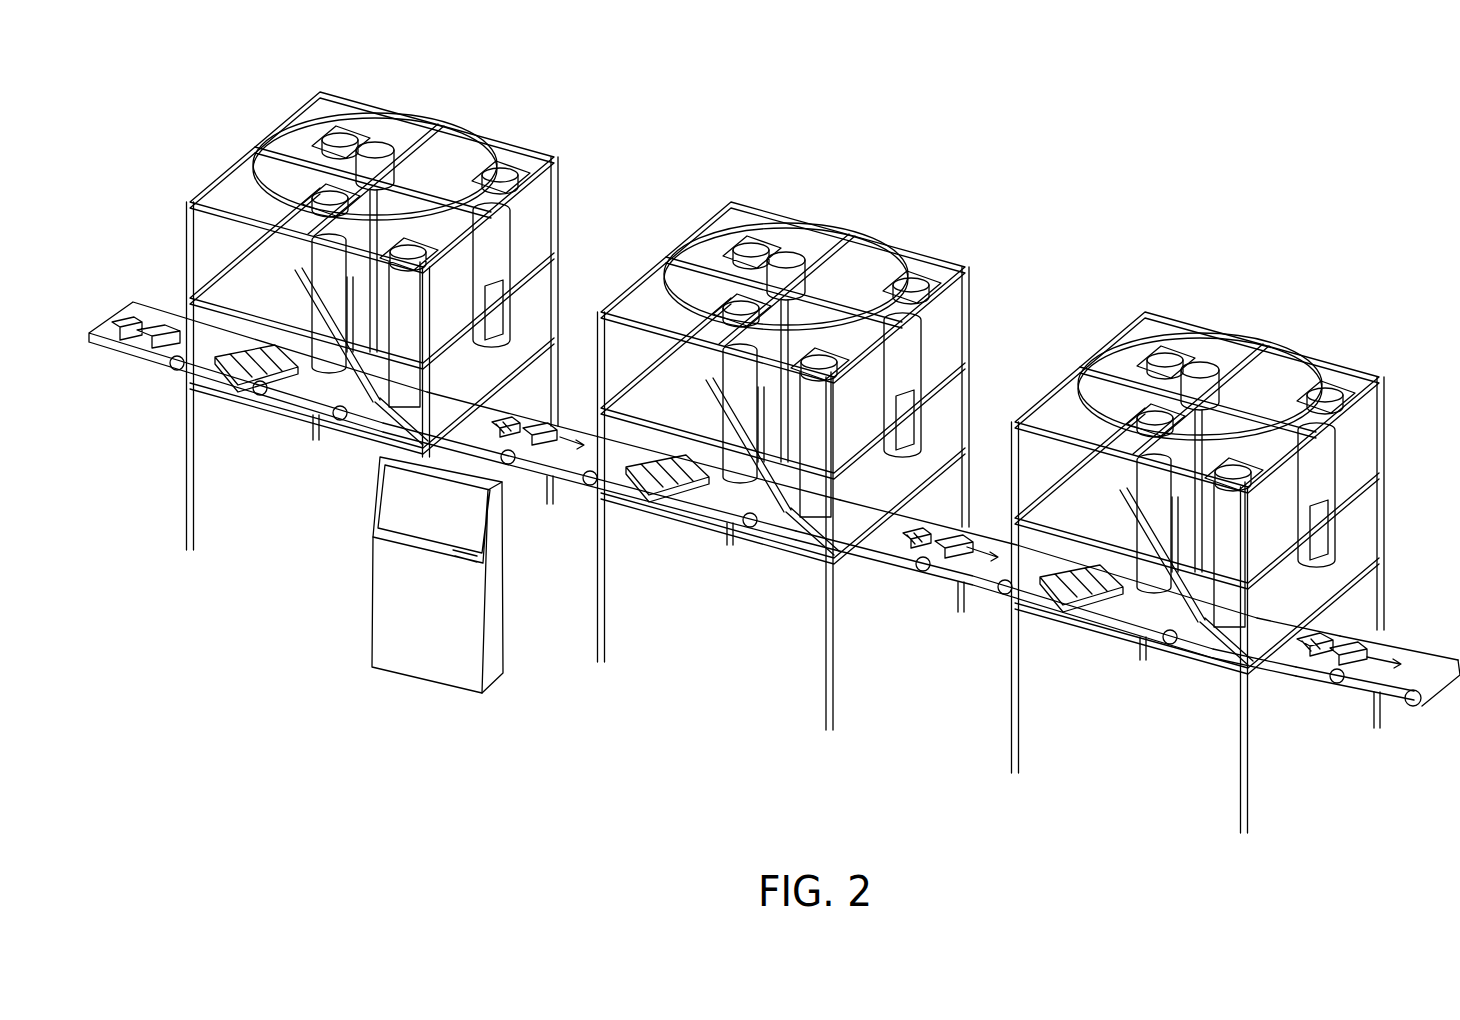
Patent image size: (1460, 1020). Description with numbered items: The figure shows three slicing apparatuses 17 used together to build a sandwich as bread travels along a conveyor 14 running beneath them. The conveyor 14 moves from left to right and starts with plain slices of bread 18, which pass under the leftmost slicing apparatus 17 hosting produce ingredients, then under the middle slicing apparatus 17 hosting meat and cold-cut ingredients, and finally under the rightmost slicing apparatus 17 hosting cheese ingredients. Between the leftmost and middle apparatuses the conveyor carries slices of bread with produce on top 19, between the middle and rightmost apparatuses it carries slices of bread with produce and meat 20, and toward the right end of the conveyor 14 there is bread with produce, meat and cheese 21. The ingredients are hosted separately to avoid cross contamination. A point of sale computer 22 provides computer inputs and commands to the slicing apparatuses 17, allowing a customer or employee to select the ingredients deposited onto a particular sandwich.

The slicing apparatus 17 is at (474, 94).
The bread 18 is at (154, 298).
The slices of bread with produce on top 19 is at (569, 406).
The slices of bread with produce and meat 20 is at (979, 508).
The bread with produce, meat and cheese 21 is at (1305, 659).
The conveyor 14 is at (1410, 652).
The point of sale computer 22 is at (388, 510).